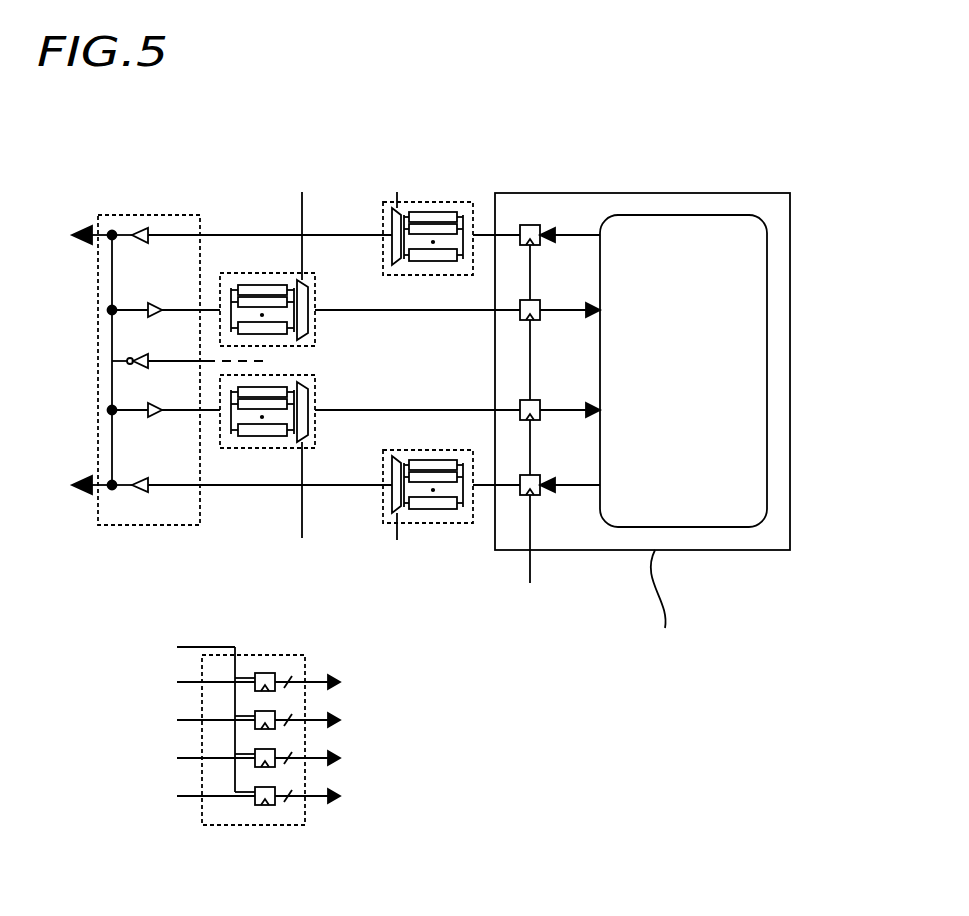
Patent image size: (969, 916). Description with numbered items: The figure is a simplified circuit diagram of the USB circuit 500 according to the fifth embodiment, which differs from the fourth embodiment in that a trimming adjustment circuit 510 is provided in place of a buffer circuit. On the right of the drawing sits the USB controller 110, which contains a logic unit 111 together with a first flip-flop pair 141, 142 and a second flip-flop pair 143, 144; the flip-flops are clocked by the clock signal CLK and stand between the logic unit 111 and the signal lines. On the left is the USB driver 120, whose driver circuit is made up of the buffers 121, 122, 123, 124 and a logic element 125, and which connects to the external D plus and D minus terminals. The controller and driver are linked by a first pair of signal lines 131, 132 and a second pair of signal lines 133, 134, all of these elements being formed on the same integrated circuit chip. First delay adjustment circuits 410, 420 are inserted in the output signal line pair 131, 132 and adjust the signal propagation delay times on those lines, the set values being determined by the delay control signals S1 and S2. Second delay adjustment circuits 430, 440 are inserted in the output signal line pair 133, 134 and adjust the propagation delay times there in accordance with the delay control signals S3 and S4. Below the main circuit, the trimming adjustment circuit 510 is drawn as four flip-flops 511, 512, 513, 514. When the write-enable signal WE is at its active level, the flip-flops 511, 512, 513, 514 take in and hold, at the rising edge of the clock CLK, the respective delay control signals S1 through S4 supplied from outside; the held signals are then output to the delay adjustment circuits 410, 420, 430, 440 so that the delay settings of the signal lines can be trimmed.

The USB circuit 500 is at (755, 103).
The USB controller 110 is at (628, 193).
The logic unit 111 is at (768, 337).
The USB driver 120 is at (180, 215).
The buffer 121 is at (140, 228).
The buffer 122 is at (137, 478).
The buffer 123 is at (158, 303).
The buffer 124 is at (157, 403).
The logic element 125 is at (132, 358).
The signal line 131 is at (220, 235).
The signal line 132 is at (272, 486).
The signal line 133 is at (422, 310).
The signal line 134 is at (440, 410).
The flip-flop 141 is at (531, 225).
The flip-flop 142 is at (540, 475).
The flip-flop 143 is at (540, 300).
The flip-flop 144 is at (540, 400).
The first delay adjustment circuit 410 is at (437, 202).
The first delay adjustment circuit 420 is at (435, 523).
The second delay adjustment circuit 430 is at (262, 273).
The second delay adjustment circuit 440 is at (316, 395).
The trimming adjustment circuit 510 is at (281, 750).
The flip-flop 511 is at (266, 673).
The flip-flop 512 is at (266, 711).
The flip-flop 513 is at (266, 749).
The flip-flop 514 is at (266, 787).